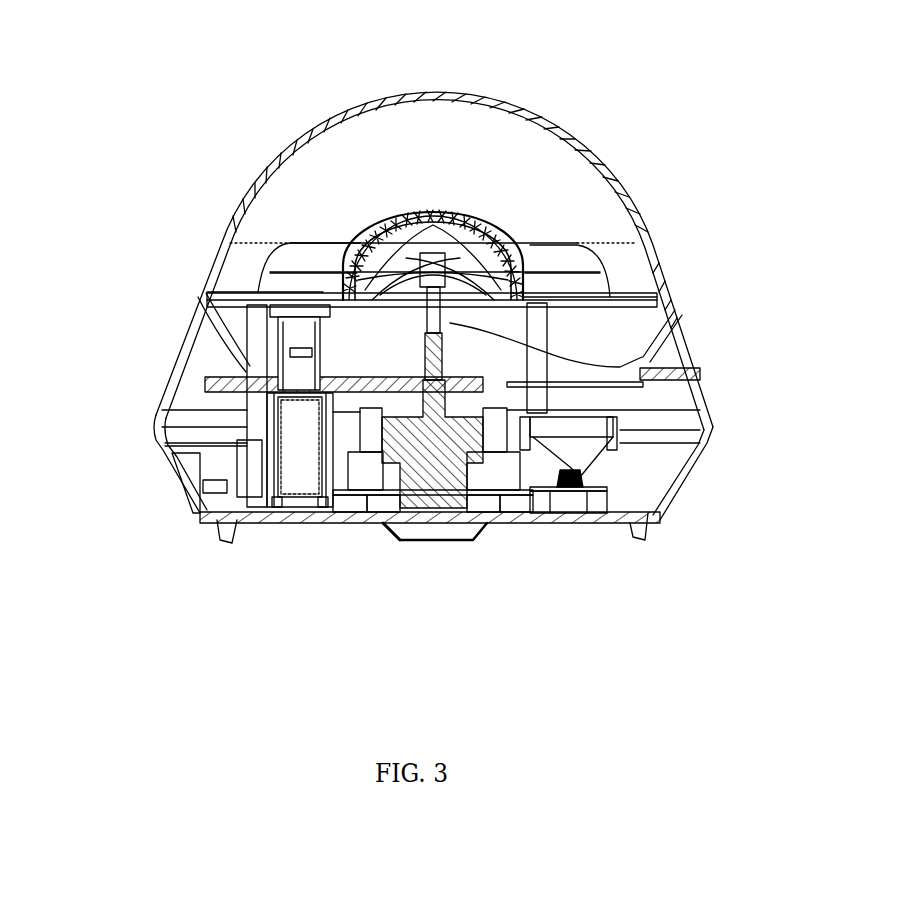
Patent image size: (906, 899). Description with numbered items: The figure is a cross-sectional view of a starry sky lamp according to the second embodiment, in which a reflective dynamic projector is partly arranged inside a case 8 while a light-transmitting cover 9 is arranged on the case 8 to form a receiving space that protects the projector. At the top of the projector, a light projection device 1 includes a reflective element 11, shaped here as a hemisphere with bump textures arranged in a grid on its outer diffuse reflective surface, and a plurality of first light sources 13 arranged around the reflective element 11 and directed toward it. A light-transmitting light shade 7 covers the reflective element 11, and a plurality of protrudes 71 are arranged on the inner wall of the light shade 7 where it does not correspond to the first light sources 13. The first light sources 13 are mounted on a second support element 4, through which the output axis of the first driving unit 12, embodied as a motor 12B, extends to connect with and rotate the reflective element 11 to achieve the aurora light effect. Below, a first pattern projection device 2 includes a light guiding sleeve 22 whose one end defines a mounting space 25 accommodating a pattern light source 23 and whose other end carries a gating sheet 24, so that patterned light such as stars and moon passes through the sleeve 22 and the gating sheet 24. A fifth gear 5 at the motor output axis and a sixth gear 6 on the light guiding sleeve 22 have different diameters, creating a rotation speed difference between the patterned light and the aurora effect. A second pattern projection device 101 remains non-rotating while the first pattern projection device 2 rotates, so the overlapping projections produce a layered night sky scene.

The light projection device 1 is at (363, 227).
The first pattern projection device 2 is at (290, 530).
The second support element 4 is at (235, 305).
The fifth gear 5 is at (413, 383).
The sixth gear 6 is at (217, 383).
The light-transmitting light shade 7 is at (412, 212).
The case 8 is at (163, 393).
The light-transmitting cover 9 is at (535, 122).
The reflective element 11 is at (376, 233).
The first driving unit 12 is at (382, 527).
The motor 12B is at (480, 529).
The first light sources 13 is at (550, 265).
The light guiding sleeve 22 is at (278, 352).
The pattern light source 23 is at (302, 467).
The gating sheet 24 is at (302, 330).
The mounting space 25 is at (317, 410).
The protrudes 71 is at (453, 212).
The second pattern projection device 101 is at (583, 477).